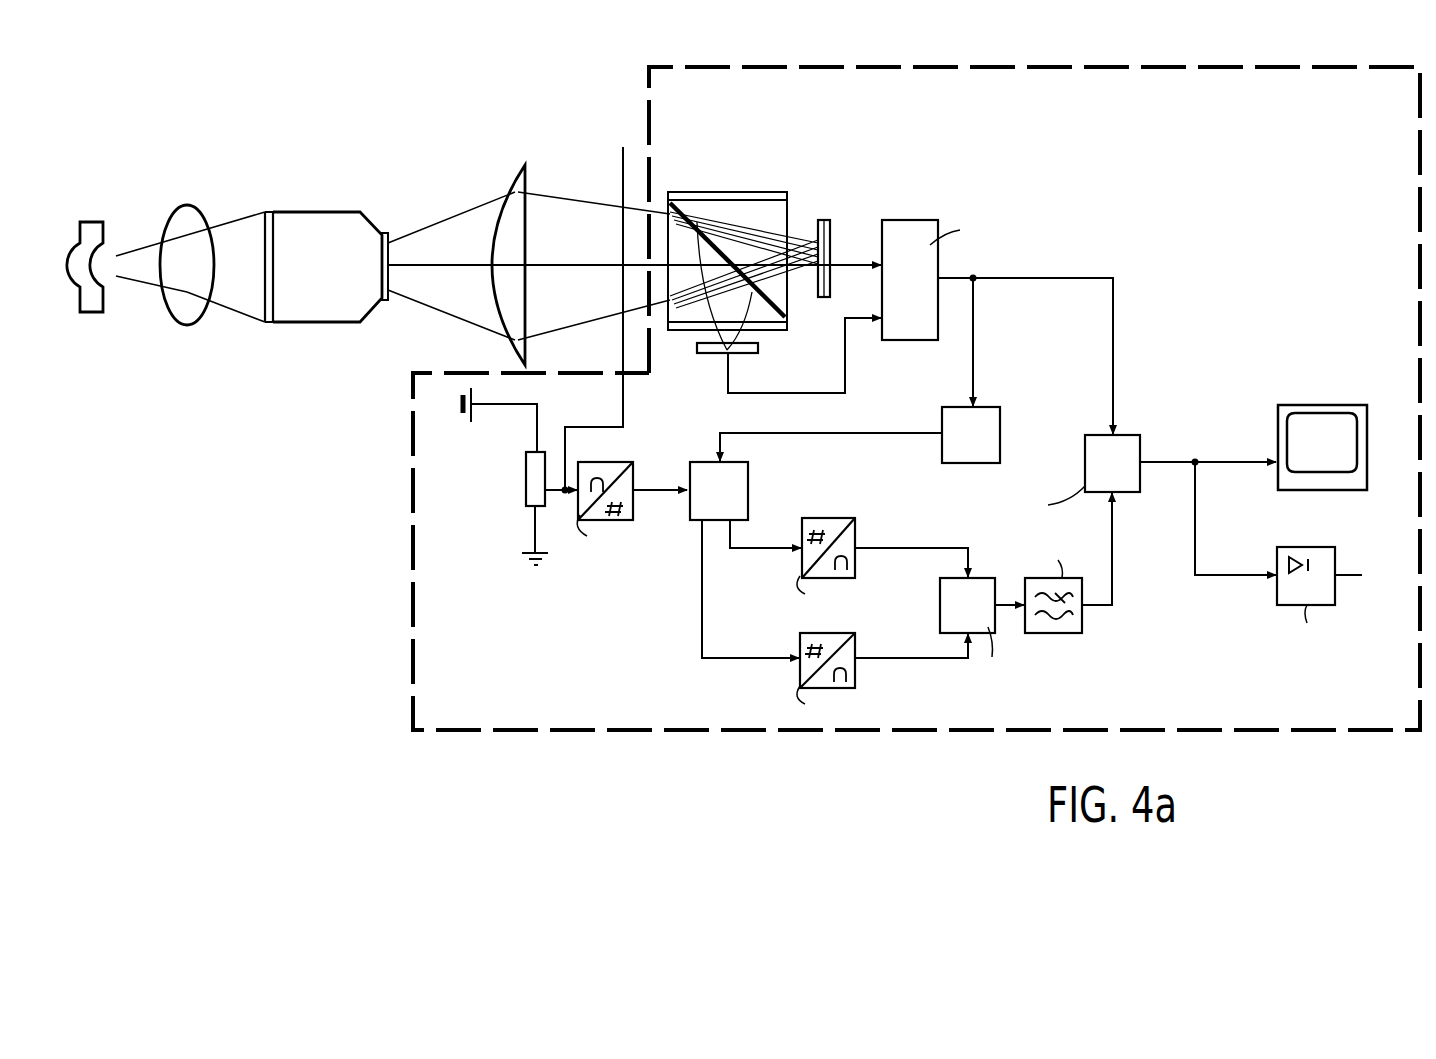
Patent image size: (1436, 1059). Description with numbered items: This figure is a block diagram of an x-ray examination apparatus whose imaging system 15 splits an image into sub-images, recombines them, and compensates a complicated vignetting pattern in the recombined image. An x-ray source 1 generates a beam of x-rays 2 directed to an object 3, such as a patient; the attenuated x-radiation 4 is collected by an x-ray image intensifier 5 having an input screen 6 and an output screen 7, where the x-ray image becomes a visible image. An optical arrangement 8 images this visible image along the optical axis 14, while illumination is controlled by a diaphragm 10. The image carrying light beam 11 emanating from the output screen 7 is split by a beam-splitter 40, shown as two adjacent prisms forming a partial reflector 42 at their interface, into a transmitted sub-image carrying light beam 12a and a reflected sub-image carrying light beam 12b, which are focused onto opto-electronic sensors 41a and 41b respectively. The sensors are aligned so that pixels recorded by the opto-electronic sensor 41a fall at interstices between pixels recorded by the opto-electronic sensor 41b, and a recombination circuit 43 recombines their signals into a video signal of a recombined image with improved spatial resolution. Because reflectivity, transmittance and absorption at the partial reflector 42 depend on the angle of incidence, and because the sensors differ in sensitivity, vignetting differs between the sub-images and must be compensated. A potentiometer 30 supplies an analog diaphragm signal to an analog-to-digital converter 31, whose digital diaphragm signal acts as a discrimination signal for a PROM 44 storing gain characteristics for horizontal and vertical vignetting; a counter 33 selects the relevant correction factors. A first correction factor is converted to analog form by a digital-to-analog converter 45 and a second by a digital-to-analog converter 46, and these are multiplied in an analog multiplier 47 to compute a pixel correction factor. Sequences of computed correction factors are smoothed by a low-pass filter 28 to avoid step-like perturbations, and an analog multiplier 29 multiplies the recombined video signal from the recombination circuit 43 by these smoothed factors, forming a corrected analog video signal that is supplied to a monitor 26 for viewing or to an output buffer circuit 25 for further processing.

The x-ray source 1 is at (92, 235).
The beam of x-rays 2 is at (136, 262).
The object 3 is at (190, 213).
The attenuated x-radiation 4 is at (233, 248).
The x-ray image intensifier 5 is at (335, 217).
The input screen 6 is at (270, 213).
The output screen 7 is at (385, 235).
The optical arrangement 8 is at (518, 182).
The diaphragm 10 is at (626, 153).
The image carrying light beam 11 is at (615, 310).
The transmitted sub-image carrying light beam 12a is at (812, 258).
The reflected sub-image carrying light beam 12b is at (735, 305).
The optical axis 14 is at (457, 265).
The imaging system 15 is at (1365, 65).
The output buffer circuit 25 is at (1335, 549).
The monitor 26 is at (1358, 420).
The low-pass filter 28 is at (1070, 625).
The analog multiplier 29 is at (1130, 447).
The potentiometer 30 is at (526, 470).
The analog-to-digital converter 31 is at (618, 466).
The counter 33 is at (1000, 412).
The beam-splitter 40 is at (775, 193).
The opto-electronic sensor 41a is at (826, 222).
The opto-electronic sensor 41b is at (710, 351).
The partial reflector 42 is at (699, 224).
The recombination circuit 43 is at (919, 228).
The PROM 44 is at (738, 476).
The digital-to-analog converter 45 is at (855, 650).
The digital-to-analog converter 46 is at (838, 522).
The analog multiplier 47 is at (982, 580).